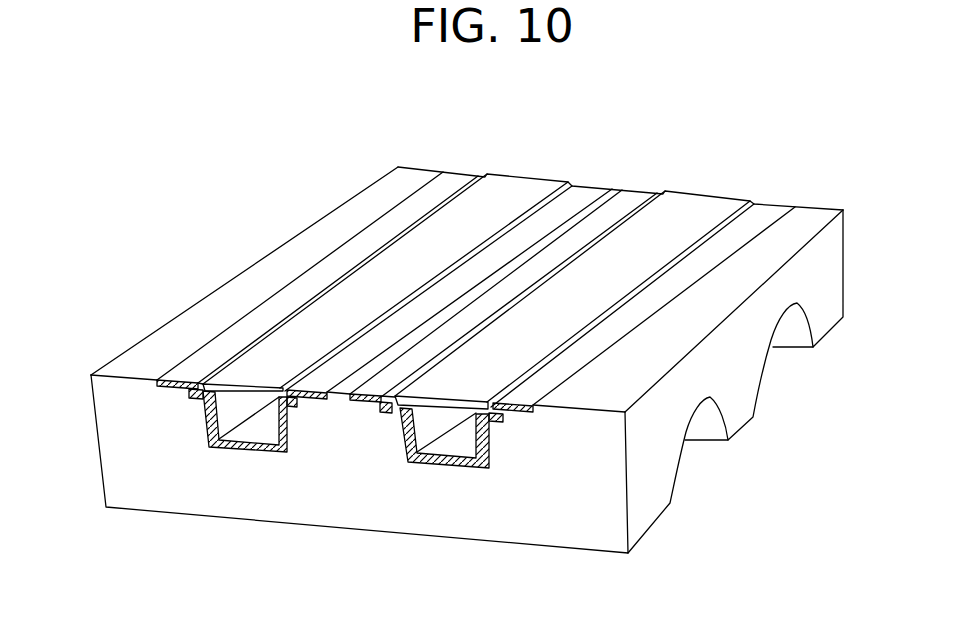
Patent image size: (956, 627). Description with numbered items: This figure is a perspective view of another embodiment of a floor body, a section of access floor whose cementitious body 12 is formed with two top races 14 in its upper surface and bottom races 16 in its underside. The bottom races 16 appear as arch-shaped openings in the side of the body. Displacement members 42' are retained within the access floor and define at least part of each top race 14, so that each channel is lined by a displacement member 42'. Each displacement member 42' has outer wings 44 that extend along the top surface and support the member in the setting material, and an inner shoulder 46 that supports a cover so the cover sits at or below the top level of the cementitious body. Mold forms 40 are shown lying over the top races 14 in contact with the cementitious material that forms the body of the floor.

The base body 12 is at (130, 449).
The top race 14 is at (240, 458).
The bottom race 16 is at (703, 489).
The mold form 40 is at (515, 193).
The displacement member 42' is at (348, 483).
The outer wing 44 is at (523, 411).
The inner shoulder 46 is at (497, 428).